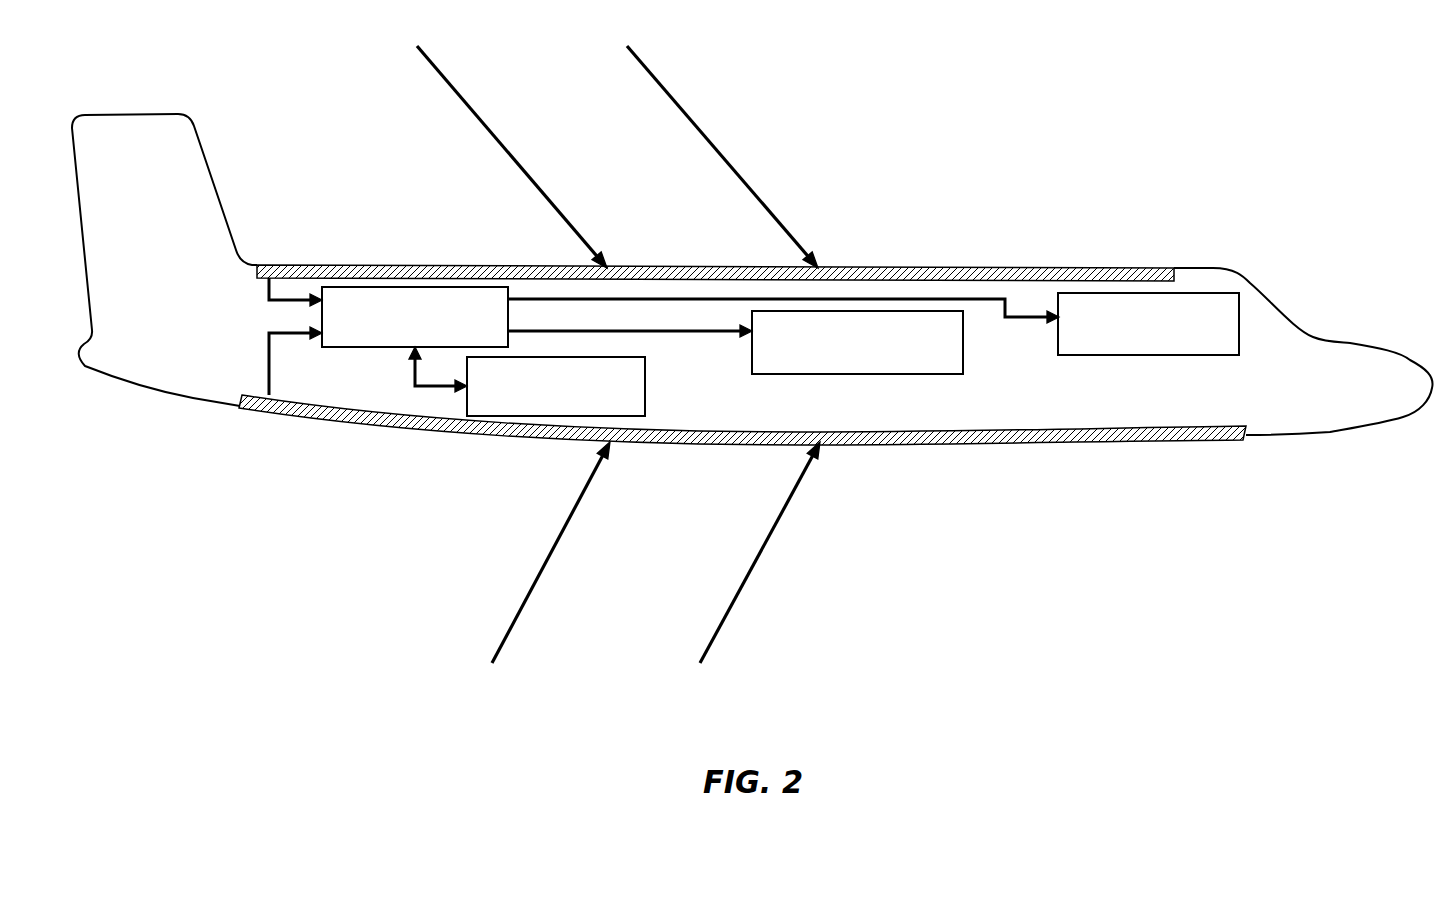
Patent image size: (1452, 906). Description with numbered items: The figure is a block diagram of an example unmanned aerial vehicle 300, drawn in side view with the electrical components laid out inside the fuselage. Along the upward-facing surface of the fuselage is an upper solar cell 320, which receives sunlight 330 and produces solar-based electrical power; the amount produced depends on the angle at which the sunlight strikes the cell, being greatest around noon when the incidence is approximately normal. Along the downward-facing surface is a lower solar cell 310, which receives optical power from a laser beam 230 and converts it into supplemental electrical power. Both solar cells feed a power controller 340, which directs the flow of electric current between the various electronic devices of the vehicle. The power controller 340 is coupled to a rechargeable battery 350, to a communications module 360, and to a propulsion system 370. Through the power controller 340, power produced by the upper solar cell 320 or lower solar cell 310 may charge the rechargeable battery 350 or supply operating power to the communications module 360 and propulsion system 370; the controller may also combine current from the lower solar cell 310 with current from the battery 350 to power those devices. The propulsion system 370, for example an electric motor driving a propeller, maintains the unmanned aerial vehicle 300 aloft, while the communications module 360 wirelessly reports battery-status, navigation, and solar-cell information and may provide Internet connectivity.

The unmanned aerial vehicle 300 is at (752, 274).
The lower solar cell 310 is at (1087, 430).
The upper solar cell 320 is at (935, 242).
The sunlight 330 is at (677, 113).
The laser beam 230 is at (717, 632).
The power controller 340 is at (664, 336).
The rechargeable battery 350 is at (527, 381).
The communications module 360 is at (857, 342).
The propulsion system 370 is at (1148, 324).